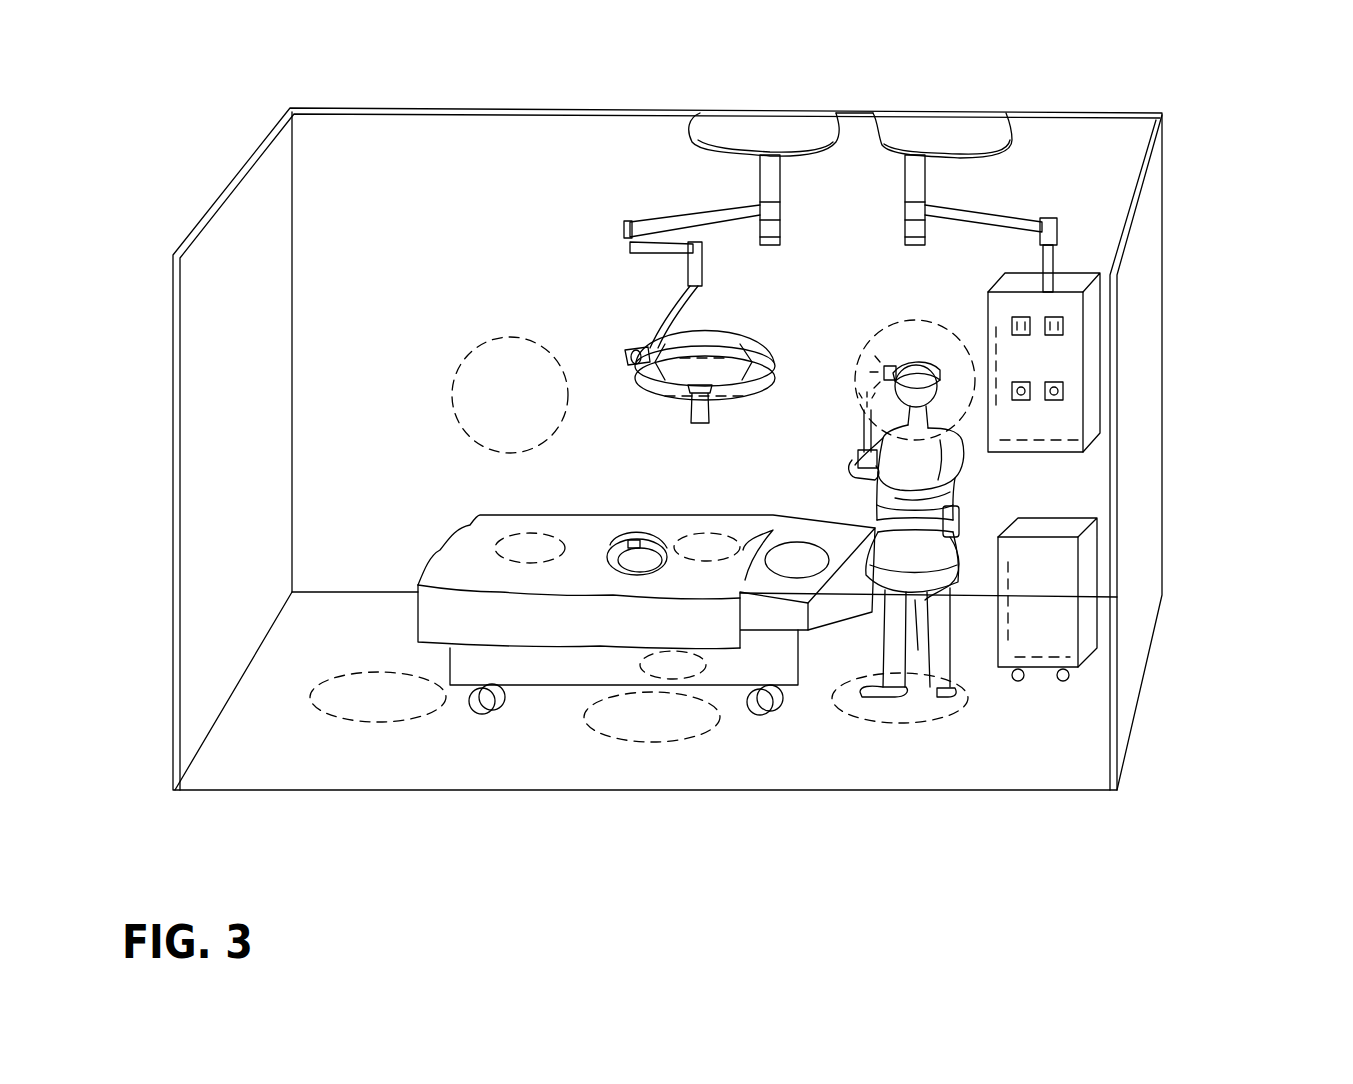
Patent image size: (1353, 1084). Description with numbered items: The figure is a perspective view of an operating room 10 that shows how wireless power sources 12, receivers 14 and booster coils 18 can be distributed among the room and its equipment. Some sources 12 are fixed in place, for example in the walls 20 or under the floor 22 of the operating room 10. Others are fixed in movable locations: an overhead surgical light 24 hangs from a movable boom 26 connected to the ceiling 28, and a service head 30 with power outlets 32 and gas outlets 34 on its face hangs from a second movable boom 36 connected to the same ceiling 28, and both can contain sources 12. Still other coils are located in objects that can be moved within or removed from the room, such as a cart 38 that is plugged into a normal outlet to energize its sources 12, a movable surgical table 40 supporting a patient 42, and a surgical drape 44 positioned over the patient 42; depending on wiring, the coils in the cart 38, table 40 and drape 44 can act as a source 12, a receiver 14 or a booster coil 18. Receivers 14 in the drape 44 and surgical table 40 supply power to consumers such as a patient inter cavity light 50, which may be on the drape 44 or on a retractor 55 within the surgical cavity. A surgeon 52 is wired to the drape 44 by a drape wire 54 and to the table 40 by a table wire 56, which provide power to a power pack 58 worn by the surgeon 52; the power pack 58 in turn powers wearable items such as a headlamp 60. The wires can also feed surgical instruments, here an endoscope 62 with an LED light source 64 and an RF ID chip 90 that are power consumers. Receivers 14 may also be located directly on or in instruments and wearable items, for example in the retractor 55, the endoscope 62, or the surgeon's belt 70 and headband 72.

The operating room 10 is at (203, 205).
The source 12 is at (462, 345).
The receiver 14 is at (905, 365).
The booster coil 18 is at (520, 533).
The wall 20 is at (469, 165).
The floor 22 is at (260, 757).
The overhead surgical light 24 is at (673, 404).
The movable boom 26 is at (672, 213).
The ceiling 28 is at (752, 130).
The service head 30 is at (1097, 275).
The power outlets 32 is at (1064, 325).
The gas outlets 34 is at (1064, 390).
The movable boom 36 is at (996, 206).
The cart 38 is at (1082, 667).
The surgical table 40 is at (448, 657).
The patient 42 is at (790, 545).
The surgical drape 44 is at (416, 584).
The patient inter cavity light 50 is at (638, 540).
The surgeon 52 is at (958, 665).
The drape wire 54 is at (865, 595).
The retractor 55 is at (625, 542).
The table wire 56 is at (945, 590).
The power pack 58 is at (962, 518).
The headlamp 60 is at (888, 365).
The endoscope 62 is at (860, 445).
The LED light source 64 is at (864, 408).
The belt 70 is at (878, 512).
The headband 72 is at (928, 370).
The RF ID chip 90 is at (856, 456).